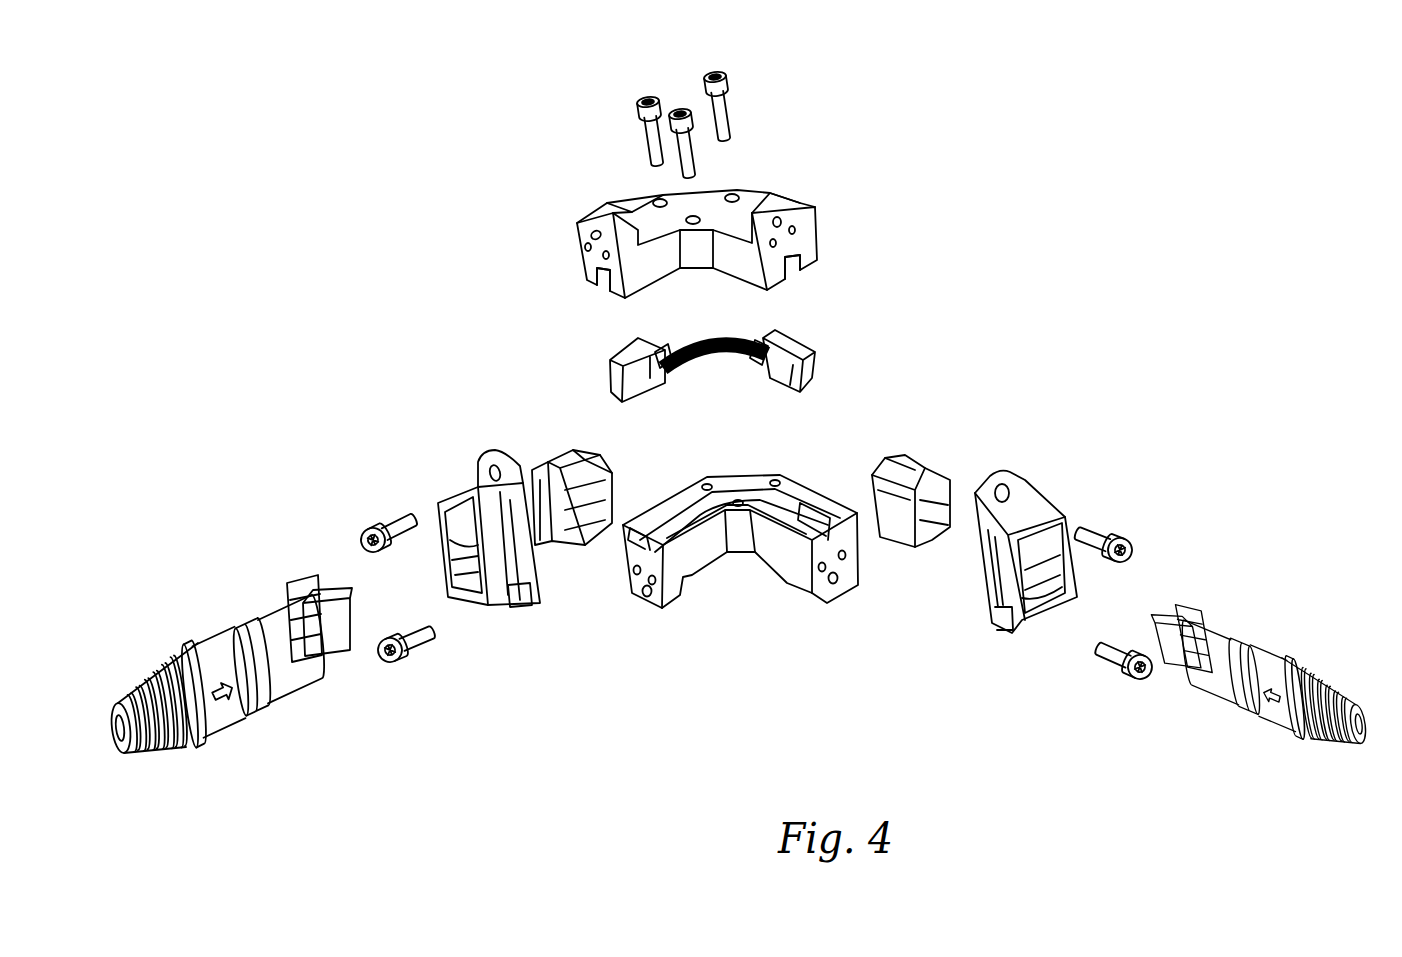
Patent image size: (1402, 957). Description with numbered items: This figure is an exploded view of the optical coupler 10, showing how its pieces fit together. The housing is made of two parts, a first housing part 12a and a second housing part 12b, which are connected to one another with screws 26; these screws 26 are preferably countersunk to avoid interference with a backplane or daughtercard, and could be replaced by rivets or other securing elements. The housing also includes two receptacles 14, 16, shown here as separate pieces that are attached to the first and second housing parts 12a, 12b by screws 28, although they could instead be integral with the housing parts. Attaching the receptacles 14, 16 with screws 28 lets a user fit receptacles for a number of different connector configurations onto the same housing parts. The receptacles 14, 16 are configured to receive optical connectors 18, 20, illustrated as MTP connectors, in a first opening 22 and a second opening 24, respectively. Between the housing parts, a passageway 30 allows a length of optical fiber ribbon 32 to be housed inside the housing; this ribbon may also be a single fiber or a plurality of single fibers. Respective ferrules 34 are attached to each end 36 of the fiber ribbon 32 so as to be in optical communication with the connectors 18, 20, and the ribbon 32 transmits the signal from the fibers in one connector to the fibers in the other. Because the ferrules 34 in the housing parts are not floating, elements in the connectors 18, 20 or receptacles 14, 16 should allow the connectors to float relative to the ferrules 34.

The optical coupler 10 is at (1130, 355).
The first housing part 12a is at (815, 233).
The second housing part 12b is at (673, 610).
The receptacle 14 is at (500, 603).
The receptacle 16 is at (1033, 500).
The optical connector 18 is at (293, 687).
The optical connector 20 is at (1240, 620).
The first opening 22 is at (453, 587).
The second opening 24 is at (1053, 597).
The screws 26 is at (693, 165).
The screws 28 is at (398, 513).
The passageway 30 is at (601, 282).
The length of optical fiber ribbon 32 is at (717, 357).
The ferrules 34 is at (813, 367).
The end 36 is at (660, 347).